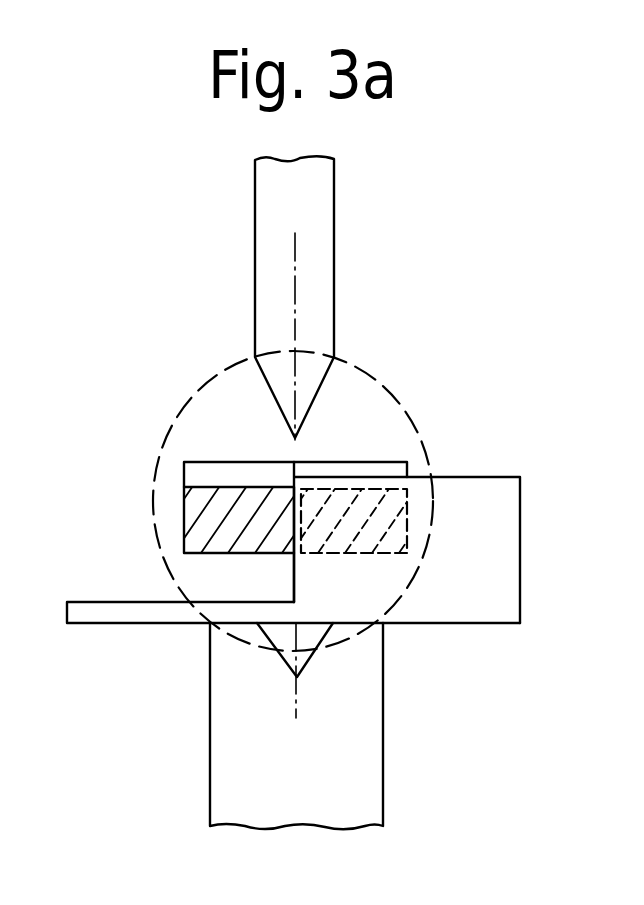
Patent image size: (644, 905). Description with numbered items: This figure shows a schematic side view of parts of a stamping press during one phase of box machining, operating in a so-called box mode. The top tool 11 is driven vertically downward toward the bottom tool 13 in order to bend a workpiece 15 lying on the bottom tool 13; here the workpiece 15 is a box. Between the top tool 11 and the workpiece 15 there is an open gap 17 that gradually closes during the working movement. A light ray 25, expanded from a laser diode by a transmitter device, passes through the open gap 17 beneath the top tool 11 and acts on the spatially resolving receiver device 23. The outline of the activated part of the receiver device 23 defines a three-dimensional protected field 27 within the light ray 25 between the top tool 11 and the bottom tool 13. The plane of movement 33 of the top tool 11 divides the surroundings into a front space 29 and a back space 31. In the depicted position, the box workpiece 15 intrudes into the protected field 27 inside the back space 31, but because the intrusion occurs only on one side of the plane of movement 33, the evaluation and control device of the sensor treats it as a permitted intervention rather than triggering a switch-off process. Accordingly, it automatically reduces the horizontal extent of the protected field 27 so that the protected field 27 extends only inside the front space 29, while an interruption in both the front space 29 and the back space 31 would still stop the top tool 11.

The top tool 11 is at (263, 262).
The bottom tool 13 is at (238, 745).
The workpiece 15 is at (132, 612).
The open gap 17 is at (236, 568).
The receiver device 23 is at (197, 468).
The light ray 25 is at (205, 385).
The protected field 27 is at (213, 507).
The front space 29 is at (193, 202).
The back space 31 is at (414, 202).
The plane of movement 33 is at (297, 255).